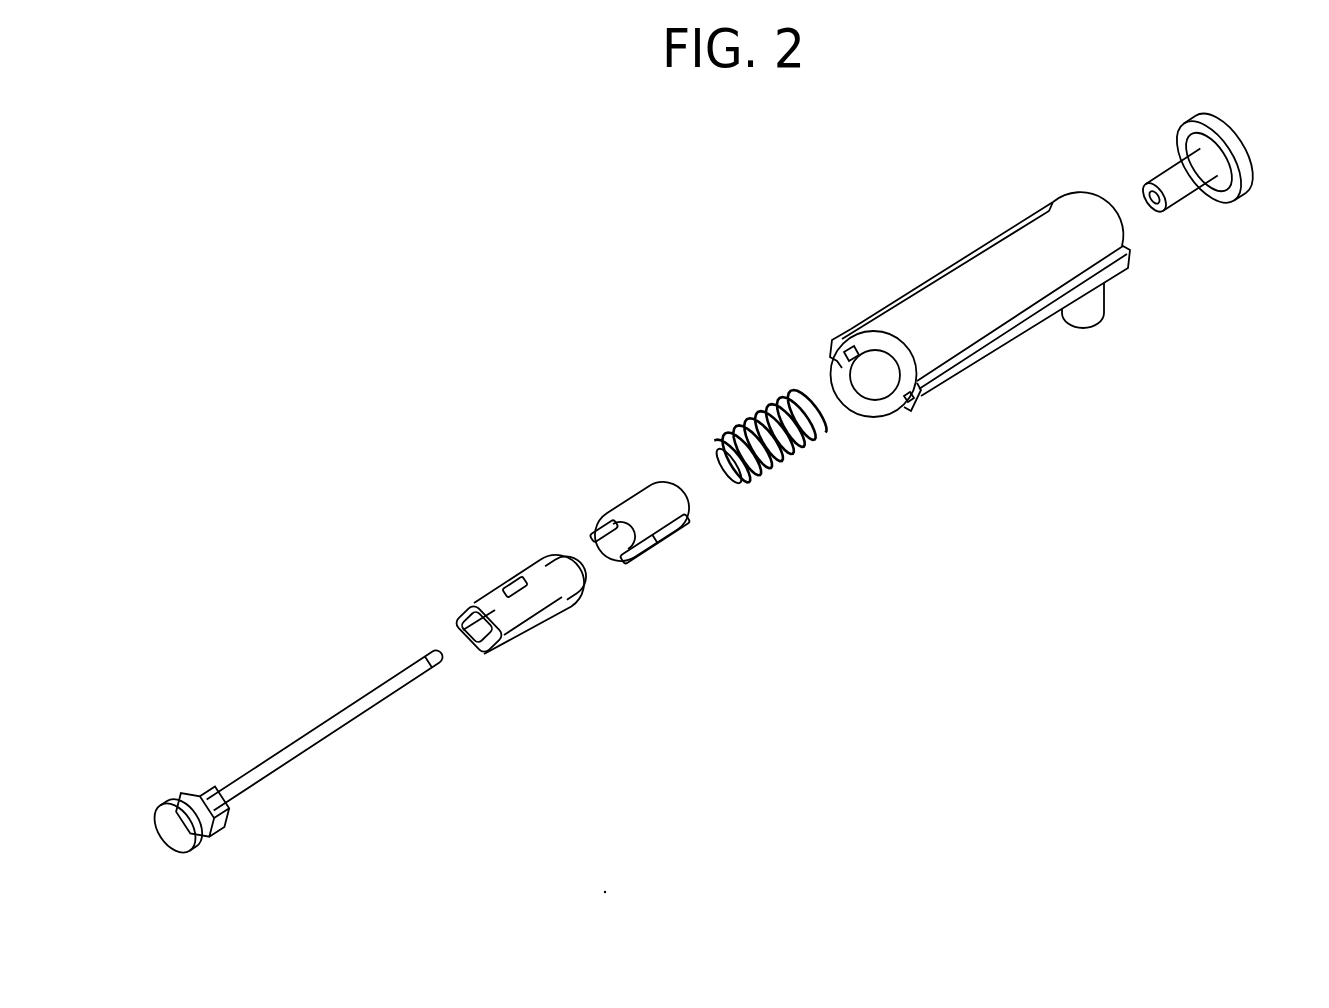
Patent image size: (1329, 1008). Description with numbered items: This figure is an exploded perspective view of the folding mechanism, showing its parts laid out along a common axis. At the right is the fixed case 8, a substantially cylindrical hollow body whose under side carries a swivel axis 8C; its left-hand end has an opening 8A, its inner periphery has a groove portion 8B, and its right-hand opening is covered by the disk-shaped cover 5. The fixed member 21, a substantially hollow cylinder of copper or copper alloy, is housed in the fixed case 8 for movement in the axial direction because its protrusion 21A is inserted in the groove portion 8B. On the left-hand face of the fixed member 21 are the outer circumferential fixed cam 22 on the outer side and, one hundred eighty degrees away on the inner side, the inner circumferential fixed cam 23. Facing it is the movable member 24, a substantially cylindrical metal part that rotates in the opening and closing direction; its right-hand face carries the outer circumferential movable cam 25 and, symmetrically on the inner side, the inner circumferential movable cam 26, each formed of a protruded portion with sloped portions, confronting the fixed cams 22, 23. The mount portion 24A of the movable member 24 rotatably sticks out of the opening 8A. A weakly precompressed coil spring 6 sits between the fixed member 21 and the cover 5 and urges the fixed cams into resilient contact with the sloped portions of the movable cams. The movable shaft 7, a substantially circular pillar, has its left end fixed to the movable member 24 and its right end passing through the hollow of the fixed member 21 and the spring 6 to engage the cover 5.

The cover 5 is at (1245, 203).
The coil spring 6 is at (795, 463).
The movable shaft 7 is at (307, 753).
The fixed case 8 is at (978, 247).
The opening 8A is at (872, 372).
The groove portion 8B is at (910, 400).
The swivel axis 8C is at (1108, 320).
The fixed member 21 is at (652, 498).
The protrusion 21A is at (683, 535).
The outer circumferential fixed cam 22 is at (637, 550).
The inner circumferential fixed cam 23 is at (598, 534).
The movable member 24 is at (518, 627).
The mount portion 24A is at (490, 600).
The outer circumferential movable cam 25 is at (577, 602).
The inner circumferential movable cam 26 is at (552, 560).